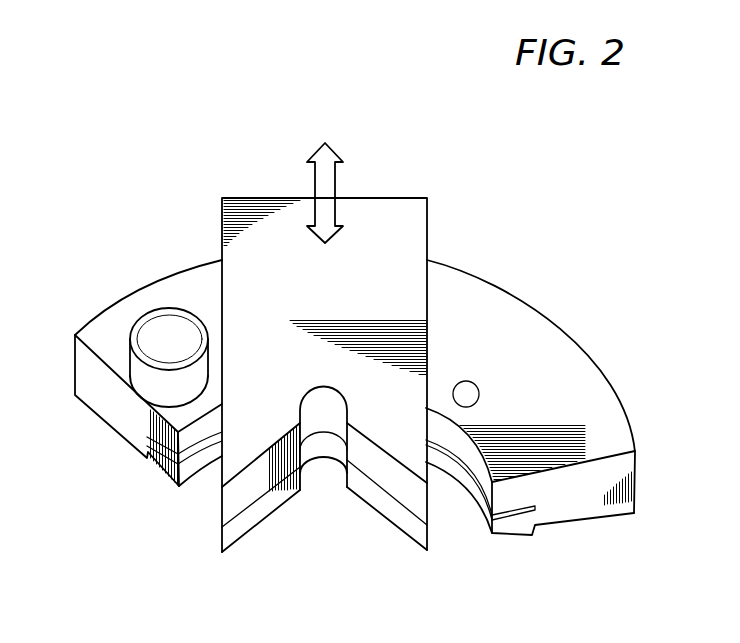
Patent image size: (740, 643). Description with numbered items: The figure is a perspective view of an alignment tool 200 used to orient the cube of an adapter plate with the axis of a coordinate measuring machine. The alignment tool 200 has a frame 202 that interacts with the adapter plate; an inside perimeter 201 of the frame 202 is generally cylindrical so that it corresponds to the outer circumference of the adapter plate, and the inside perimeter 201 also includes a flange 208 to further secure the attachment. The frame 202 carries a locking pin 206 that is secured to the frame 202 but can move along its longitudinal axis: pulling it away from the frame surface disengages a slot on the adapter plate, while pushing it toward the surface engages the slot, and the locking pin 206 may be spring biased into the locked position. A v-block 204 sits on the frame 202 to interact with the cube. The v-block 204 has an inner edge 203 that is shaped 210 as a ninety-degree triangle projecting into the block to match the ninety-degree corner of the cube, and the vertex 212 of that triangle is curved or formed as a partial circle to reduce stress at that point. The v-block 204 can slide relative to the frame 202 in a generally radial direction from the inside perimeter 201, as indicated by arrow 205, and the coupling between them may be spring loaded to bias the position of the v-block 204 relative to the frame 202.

The alignment tool 200 is at (146, 175).
The inside perimeter 201 is at (196, 476).
The frame 202 is at (107, 335).
The inner edge 203 is at (383, 483).
The v-block 204 is at (430, 226).
The arrow 205 is at (333, 143).
The locking pin 206 is at (165, 330).
The flange 208 is at (510, 523).
The shape of inner edge 210 is at (268, 513).
The vertex 212 is at (323, 417).